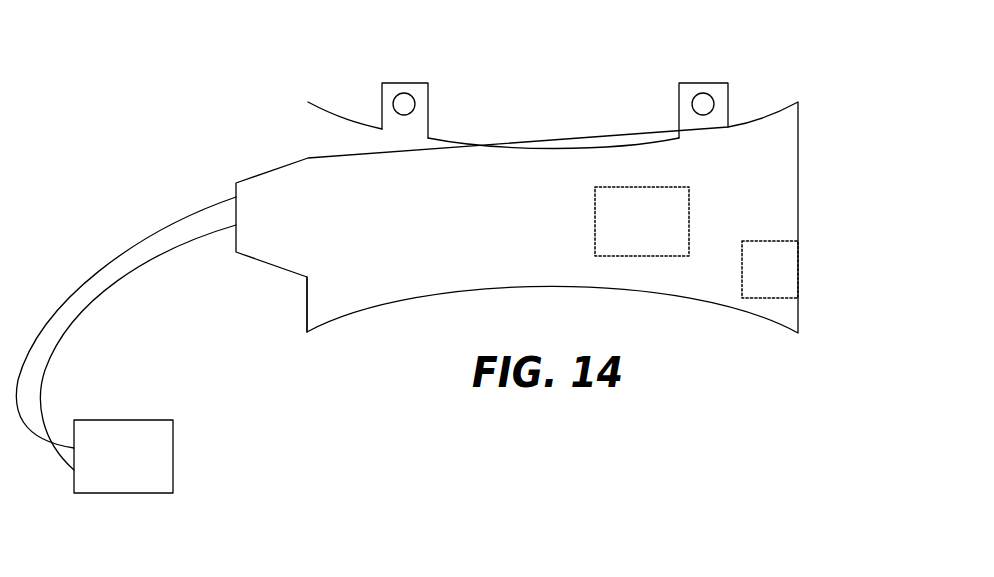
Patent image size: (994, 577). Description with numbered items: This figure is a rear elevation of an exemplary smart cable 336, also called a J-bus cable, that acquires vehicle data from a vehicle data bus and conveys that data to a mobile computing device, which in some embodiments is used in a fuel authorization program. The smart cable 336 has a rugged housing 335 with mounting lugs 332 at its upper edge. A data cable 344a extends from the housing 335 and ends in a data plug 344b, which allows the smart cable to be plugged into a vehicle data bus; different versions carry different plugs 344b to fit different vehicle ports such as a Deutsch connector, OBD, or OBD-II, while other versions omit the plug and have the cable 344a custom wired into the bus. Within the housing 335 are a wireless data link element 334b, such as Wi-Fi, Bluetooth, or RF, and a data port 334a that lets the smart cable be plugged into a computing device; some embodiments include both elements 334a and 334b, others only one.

The smart cable 336 is at (270, 138).
The mounting lugs 332 is at (729, 92).
The data port 334a is at (798, 270).
The wireless data link element 334b is at (642, 221).
The rugged housing 335 is at (307, 319).
The data cable 344a is at (115, 260).
The data plug 344b is at (116, 490).